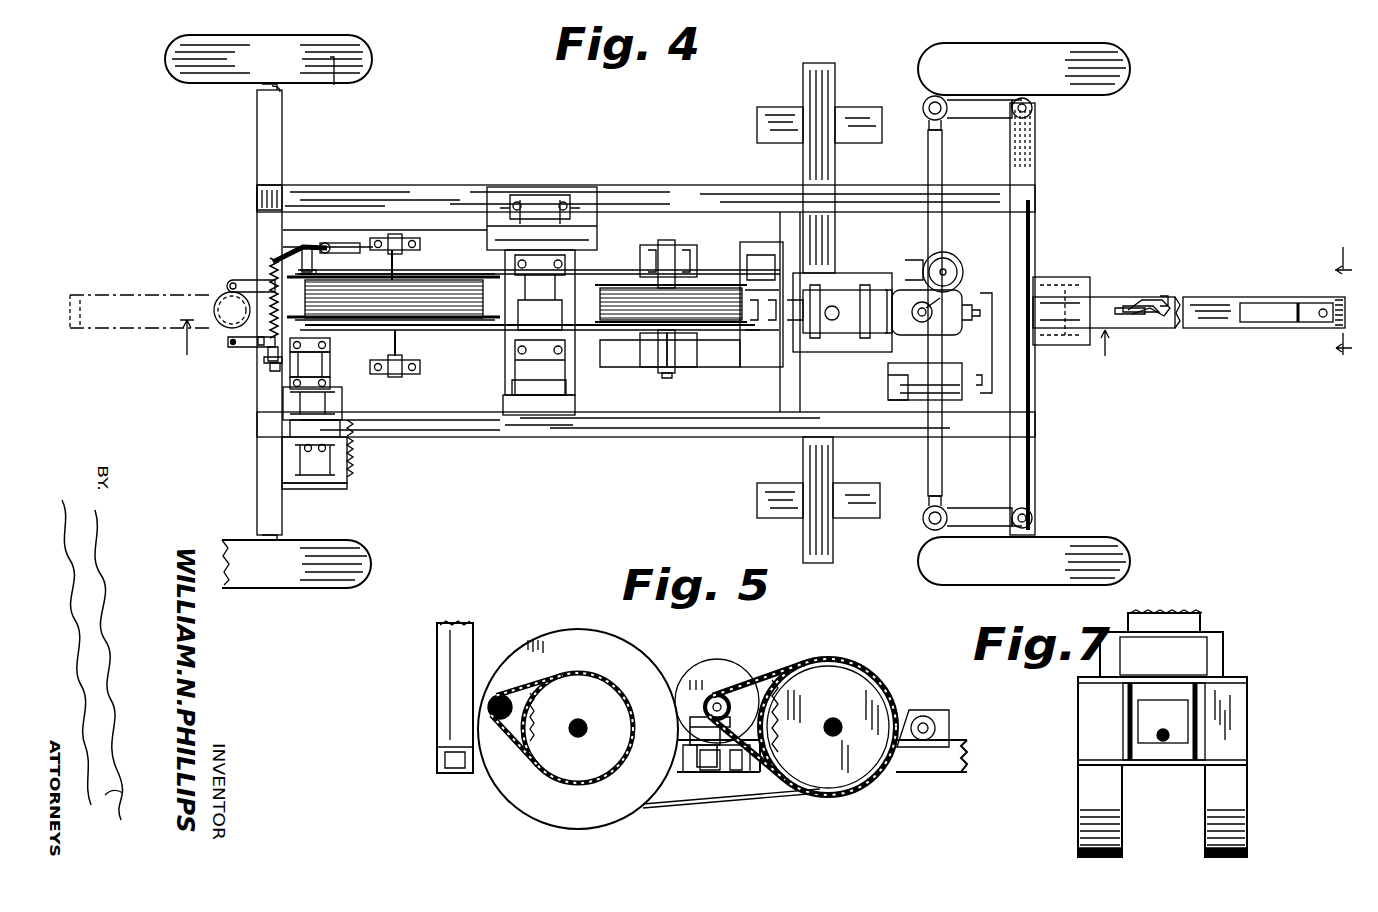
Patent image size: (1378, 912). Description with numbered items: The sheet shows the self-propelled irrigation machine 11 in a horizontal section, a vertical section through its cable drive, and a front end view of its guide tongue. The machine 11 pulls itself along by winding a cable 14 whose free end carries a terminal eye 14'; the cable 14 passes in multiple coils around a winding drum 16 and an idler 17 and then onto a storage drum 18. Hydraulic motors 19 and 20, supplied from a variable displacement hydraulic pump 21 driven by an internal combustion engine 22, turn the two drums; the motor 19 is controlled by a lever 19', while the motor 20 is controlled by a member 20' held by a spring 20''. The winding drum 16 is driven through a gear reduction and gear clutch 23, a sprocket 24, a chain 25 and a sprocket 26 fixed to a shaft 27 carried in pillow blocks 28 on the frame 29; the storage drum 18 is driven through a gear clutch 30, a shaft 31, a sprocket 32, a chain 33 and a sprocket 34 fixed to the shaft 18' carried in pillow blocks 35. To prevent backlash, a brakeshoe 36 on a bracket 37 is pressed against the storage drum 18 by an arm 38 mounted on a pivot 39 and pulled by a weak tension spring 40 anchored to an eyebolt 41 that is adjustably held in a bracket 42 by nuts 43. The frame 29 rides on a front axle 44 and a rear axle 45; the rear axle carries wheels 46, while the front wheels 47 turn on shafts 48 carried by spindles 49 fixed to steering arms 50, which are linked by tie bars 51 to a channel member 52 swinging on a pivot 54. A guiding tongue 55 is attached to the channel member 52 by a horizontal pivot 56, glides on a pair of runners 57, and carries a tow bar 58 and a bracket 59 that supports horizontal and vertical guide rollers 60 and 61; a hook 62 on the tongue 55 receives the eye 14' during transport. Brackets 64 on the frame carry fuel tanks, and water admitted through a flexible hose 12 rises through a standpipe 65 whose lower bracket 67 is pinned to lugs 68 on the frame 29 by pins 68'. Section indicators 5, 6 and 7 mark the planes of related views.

In FIG. 4, the frame 5 is at (646, 311).
In FIG. 4, the section line 6 is at (640, 342).
In FIG. 4, the section line 7 is at (1343, 306).
In FIG. 4, the irrigation machine 11 is at (462, 156).
In FIG. 4, the flexible hose 12 is at (93, 292).
In FIG. 4, the cable 14 is at (710, 358).
In FIG. 5, the cable 14 is at (731, 811).
In FIG. 7, the cable 14 is at (1158, 725).
In FIG. 4, the terminal eye 14' is at (1147, 335).
In FIG. 4, the winding drum 16 is at (696, 270).
In FIG. 4, the idler 17 is at (759, 266).
In FIG. 5, the idler 17 is at (935, 732).
In FIG. 4, the storage drum 18 is at (393, 316).
In FIG. 5, the storage drum 18 is at (578, 716).
In FIG. 5, the shaft 18' is at (574, 714).
In FIG. 4, the hydraulic motor 19 is at (526, 218).
In FIG. 5, the hydraulic motor 19 is at (717, 688).
In FIG. 4, the lever 19' is at (539, 426).
In FIG. 4, the hydraulic motor 20 is at (332, 461).
In FIG. 4, the control member 20' is at (314, 506).
In FIG. 4, the spring 20'' is at (380, 442).
In FIG. 4, the variable displacement hydraulic pump 21 is at (836, 302).
In FIG. 4, the internal combustion engine 22 is at (885, 332).
In FIG. 4, the gear reduction and gear clutch 23 is at (505, 358).
In FIG. 4, the sprocket 24 is at (615, 336).
In FIG. 5, the sprocket 24 is at (704, 699).
In FIG. 4, the chain 25 is at (640, 338).
In FIG. 5, the chain 25 is at (798, 648).
In FIG. 4, the sprocket 26 is at (718, 333).
In FIG. 5, the sprocket 26 is at (860, 672).
In FIG. 4, the shaft 27 is at (665, 372).
In FIG. 5, the shaft 27 is at (836, 720).
In FIG. 4, the pillow blocks 28 is at (692, 244).
In FIG. 4, the frame 29 is at (704, 366).
In FIG. 5, the frame 29 is at (737, 772).
In FIG. 4, the gear clutch 30 is at (344, 400).
In FIG. 4, the shaft 31 is at (372, 368).
In FIG. 5, the shaft 31 is at (493, 721).
In FIG. 4, the sprocket 32 is at (331, 345).
In FIG. 5, the sprocket 32 is at (529, 692).
In FIG. 4, the chain 33 is at (416, 322).
In FIG. 5, the chain 33 is at (580, 660).
In FIG. 4, the sprocket 34 is at (416, 346).
In FIG. 5, the sprocket 34 is at (553, 771).
In FIG. 4, the pillow blocks 35 is at (397, 240).
In FIG. 4, the brakeshoe 36 is at (318, 268).
In FIG. 4, the bracket 37 is at (256, 248).
In FIG. 4, the arm 38 is at (306, 246).
In FIG. 4, the pivot 39 is at (332, 242).
In FIG. 4, the tension spring 40 is at (244, 282).
In FIG. 4, the eyebolt 41 is at (264, 358).
In FIG. 4, the bracket 42 is at (274, 381).
In FIG. 4, the nuts 43 is at (276, 368).
In FIG. 4, the front axle 44 is at (1037, 152).
In FIG. 4, the rear axle 45 is at (283, 136).
In FIG. 4, the wheels 46 is at (340, 42).
In FIG. 4, the wheels 47 is at (1054, 46).
In FIG. 4, the shafts 48 is at (1032, 97).
In FIG. 4, the spindles 49 is at (1032, 114).
In FIG. 4, the steering arms 50 is at (956, 120).
In FIG. 4, the tie bars 51 is at (942, 158).
In FIG. 4, the channel member 52 is at (1064, 300).
In FIG. 4, the pivot 54 is at (1034, 352).
In FIG. 4, the guiding tongue 55 is at (1192, 324).
In FIG. 4, the horizontal pivot 56 is at (1097, 299).
In FIG. 7, the runners 57 is at (1078, 826).
In FIG. 4, the tow bar 58 is at (1272, 324).
In FIG. 7, the bracket 59 is at (1235, 710).
In FIG. 7, the horizontal guide rollers 60 is at (1161, 744).
In FIG. 7, the vertical guide rollers 61 is at (1147, 682).
In FIG. 4, the hook 62 is at (1136, 305).
In FIG. 4, the brackets 64 is at (806, 106).
In FIG. 4, the standpipe 65 is at (175, 294).
In FIG. 4, the lower bracket 67 is at (217, 292).
In FIG. 4, the lugs 68 is at (244, 361).
In FIG. 4, the pins 68' is at (235, 348).